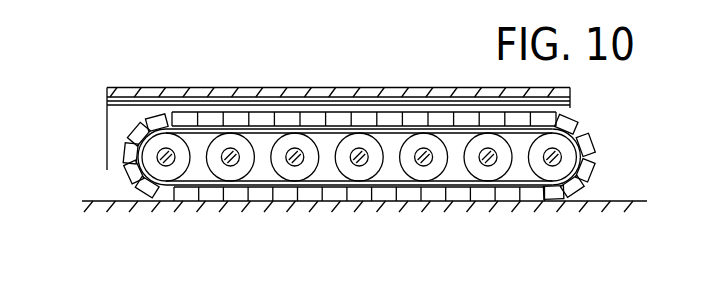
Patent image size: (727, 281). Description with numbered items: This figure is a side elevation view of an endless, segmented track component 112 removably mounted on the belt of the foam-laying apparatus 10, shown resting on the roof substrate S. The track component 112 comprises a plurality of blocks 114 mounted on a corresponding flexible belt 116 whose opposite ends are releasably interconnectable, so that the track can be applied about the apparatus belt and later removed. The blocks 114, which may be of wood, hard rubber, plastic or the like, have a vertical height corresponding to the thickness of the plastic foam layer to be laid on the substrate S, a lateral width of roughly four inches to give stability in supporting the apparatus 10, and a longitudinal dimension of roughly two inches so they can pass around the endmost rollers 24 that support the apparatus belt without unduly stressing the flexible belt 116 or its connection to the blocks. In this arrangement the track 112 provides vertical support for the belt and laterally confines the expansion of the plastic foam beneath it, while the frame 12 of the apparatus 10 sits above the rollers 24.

The apparatus 10 is at (193, 65).
The frame 12 is at (274, 86).
The endmost rollers 24 is at (150, 148).
The segmented track component 112 is at (603, 134).
The blocks 114 is at (392, 118).
The flexible belt 116 is at (453, 187).
The roof substrate S is at (98, 201).